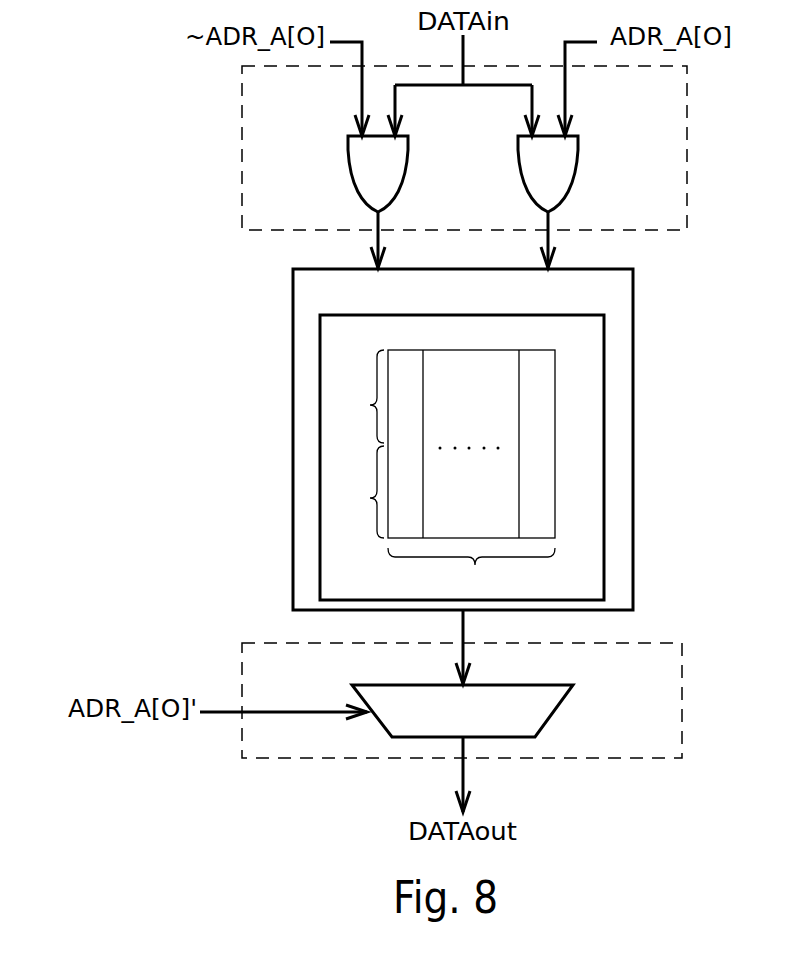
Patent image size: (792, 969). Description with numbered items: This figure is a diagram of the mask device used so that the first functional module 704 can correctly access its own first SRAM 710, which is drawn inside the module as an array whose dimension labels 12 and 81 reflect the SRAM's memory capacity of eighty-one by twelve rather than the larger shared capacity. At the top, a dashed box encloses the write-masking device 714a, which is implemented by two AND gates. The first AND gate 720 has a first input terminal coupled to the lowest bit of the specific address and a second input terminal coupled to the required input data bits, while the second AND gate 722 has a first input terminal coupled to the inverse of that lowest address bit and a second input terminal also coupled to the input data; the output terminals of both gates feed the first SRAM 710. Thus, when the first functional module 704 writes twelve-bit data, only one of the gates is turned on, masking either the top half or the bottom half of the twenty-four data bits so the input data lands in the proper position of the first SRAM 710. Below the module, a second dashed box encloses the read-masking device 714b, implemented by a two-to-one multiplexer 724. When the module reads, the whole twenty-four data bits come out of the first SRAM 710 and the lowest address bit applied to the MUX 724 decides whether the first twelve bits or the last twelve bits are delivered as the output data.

The write-masking device 714a is at (687, 148).
The second AND gate 722 is at (358, 193).
The first AND gate 720 is at (570, 195).
The first functional module 704 is at (633, 440).
The first SRAM 710 is at (604, 480).
The SRAM cell group 12 is at (359, 444).
The SRAM array width 81 is at (471, 574).
The read-masking device 714b is at (682, 702).
The multiplexer 724 is at (558, 715).